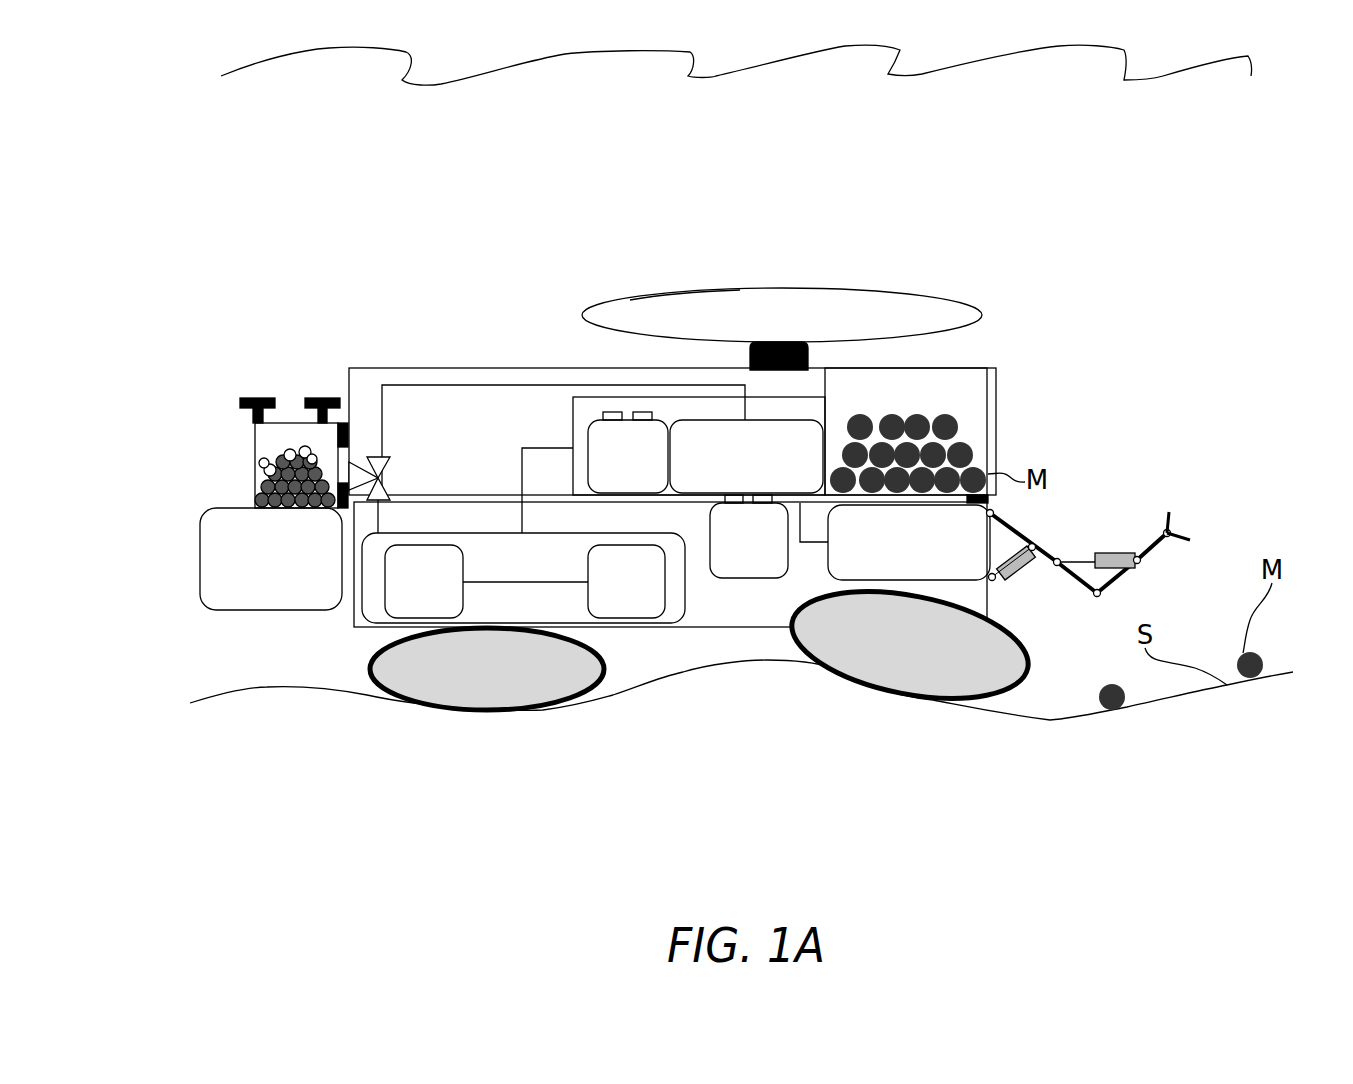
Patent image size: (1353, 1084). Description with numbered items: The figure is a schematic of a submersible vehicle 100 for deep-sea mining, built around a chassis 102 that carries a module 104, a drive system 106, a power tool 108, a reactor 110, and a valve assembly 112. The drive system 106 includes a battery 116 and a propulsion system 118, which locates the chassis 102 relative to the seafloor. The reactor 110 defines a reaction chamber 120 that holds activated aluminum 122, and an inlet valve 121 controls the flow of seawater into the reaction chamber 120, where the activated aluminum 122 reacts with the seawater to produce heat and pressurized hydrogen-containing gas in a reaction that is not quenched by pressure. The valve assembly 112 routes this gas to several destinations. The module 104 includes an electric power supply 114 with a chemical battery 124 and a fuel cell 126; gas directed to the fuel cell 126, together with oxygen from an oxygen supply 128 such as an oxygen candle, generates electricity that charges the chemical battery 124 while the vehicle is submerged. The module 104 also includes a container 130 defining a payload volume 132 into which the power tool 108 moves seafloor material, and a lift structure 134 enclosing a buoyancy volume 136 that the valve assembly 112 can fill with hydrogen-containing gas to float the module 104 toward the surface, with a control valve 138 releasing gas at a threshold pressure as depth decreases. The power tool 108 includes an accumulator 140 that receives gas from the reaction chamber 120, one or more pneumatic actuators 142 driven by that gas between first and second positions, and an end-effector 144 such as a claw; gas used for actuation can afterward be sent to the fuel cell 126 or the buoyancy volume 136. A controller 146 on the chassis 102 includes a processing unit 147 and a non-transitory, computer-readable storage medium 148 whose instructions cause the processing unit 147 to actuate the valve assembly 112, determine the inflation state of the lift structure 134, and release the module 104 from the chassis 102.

The submersible vehicle 100 is at (346, 193).
The chassis 102 is at (717, 628).
The module 104 is at (477, 368).
The drive system 106 is at (343, 658).
The power tool 108 is at (1123, 531).
The reactor 110 is at (255, 440).
The valve assembly 112 is at (388, 460).
The electric power supply 114 is at (586, 421).
The battery 116 is at (732, 556).
The propulsion system 118 is at (547, 680).
The reaction chamber 120 is at (288, 432).
The inlet valve 121 is at (257, 397).
The activated aluminum 122 is at (260, 483).
The chemical battery 124 is at (610, 472).
The fuel cell 126 is at (729, 485).
The oxygen supply 128 is at (248, 600).
The container 130 is at (996, 388).
The payload volume 132 is at (978, 418).
The lift structure 134 is at (933, 295).
The buoyancy volume 136 is at (660, 310).
The control valve 138 is at (748, 363).
The accumulator 140 is at (893, 570).
The pneumatic actuator 142 is at (1018, 572).
The end-effector 144 is at (1173, 530).
The controller 146 is at (505, 581).
The processing unit 147 is at (407, 597).
The non-transitory, computer-readable storage medium 148 is at (610, 597).